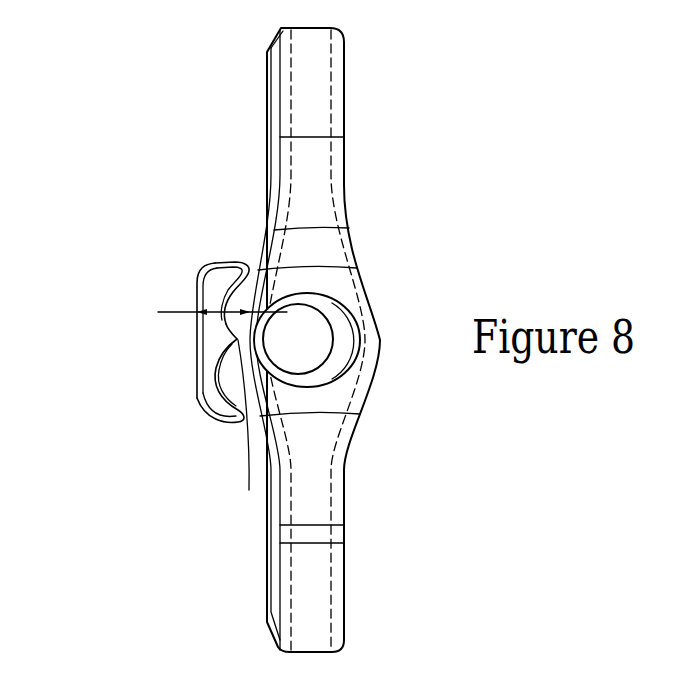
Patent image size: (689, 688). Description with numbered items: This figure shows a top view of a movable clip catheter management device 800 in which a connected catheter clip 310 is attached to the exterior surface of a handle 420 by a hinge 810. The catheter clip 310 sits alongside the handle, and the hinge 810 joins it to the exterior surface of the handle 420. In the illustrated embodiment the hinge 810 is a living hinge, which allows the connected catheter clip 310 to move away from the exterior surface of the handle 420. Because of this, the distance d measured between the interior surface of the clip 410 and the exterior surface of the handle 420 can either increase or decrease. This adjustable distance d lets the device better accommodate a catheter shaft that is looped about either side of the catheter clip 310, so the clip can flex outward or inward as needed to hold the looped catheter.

The movable clip catheter management device 800 is at (165, 460).
The connected catheter clip 310 is at (205, 400).
The interior surface of clip 410 is at (253, 268).
The exterior surface of handle 420 is at (233, 335).
The hinge 810 is at (249, 490).
The distance d is at (220, 312).